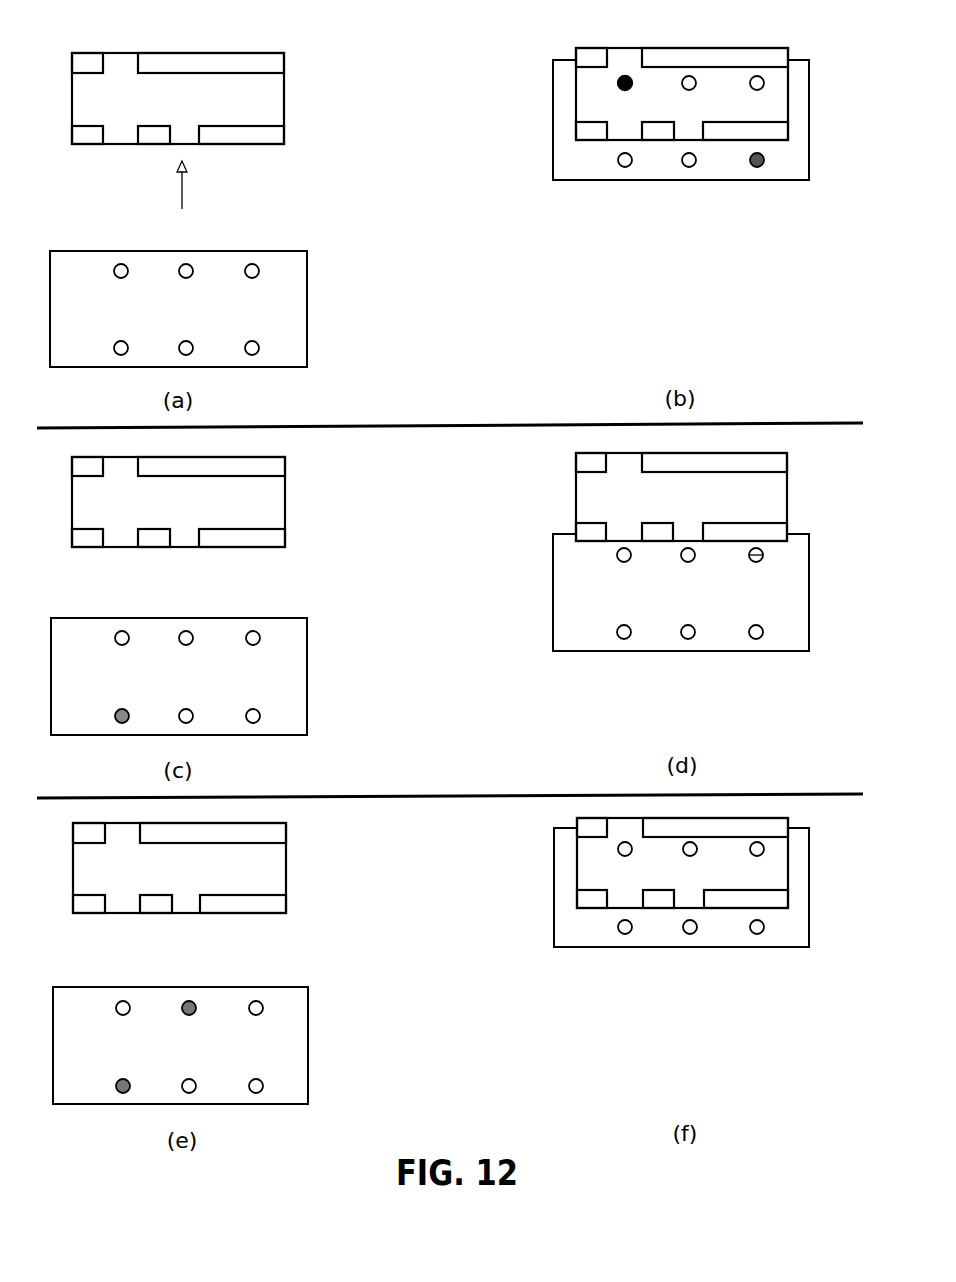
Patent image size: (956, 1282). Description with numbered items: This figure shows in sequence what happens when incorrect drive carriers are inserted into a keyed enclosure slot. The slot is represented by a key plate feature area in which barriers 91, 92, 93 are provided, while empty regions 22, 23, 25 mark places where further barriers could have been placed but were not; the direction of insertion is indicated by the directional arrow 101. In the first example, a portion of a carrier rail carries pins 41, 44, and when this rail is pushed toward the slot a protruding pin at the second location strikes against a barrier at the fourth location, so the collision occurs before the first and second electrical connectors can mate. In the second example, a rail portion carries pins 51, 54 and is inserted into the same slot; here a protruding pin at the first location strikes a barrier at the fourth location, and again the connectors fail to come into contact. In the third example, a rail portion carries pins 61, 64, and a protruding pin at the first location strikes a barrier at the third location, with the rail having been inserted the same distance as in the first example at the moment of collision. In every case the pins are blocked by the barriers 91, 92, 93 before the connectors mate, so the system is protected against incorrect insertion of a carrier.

The empty region 22 is at (119, 67).
The empty region 23 is at (119, 135).
The empty region 25 is at (183, 135).
The barrier 91 is at (249, 146).
The barrier 92 is at (253, 73).
The barrier 93 is at (187, 73).
The directional arrow 101 is at (182, 201).
The pin 41 is at (114, 265).
The pin 44 is at (260, 348).
The pin 51 is at (261, 638).
The pin 54 is at (117, 708).
The pin 61 is at (193, 1003).
The pin 64 is at (122, 1080).